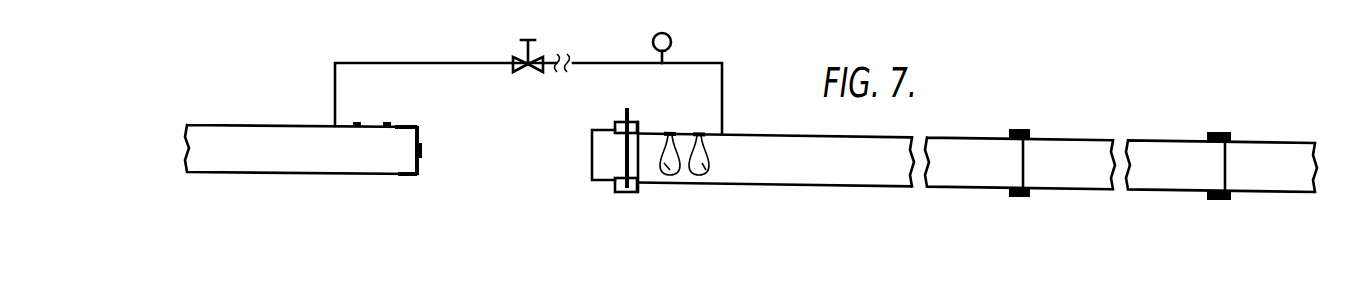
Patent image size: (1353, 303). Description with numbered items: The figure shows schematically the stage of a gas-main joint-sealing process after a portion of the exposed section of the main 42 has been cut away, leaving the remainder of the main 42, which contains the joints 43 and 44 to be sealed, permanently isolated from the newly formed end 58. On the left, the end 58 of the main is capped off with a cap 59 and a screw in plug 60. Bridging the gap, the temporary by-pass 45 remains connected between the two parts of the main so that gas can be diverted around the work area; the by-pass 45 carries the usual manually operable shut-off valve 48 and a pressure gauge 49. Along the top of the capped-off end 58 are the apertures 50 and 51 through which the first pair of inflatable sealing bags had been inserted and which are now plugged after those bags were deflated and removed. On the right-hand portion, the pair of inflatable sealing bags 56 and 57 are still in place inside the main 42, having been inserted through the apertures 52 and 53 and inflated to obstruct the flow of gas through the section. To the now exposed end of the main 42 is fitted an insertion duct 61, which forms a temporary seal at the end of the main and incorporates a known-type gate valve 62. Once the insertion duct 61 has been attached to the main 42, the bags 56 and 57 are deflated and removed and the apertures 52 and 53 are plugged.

The main 42 is at (963, 137).
The joint 43 is at (1028, 132).
The joint 44 is at (1231, 138).
The temporary by-pass 45 is at (411, 62).
The shut-off valve 48 is at (539, 57).
The pressure gauge 49 is at (672, 42).
The aperture 50 is at (357, 123).
The aperture 51 is at (387, 123).
The aperture 52 is at (669, 133).
The aperture 53 is at (701, 133).
The inflatable sealing bag 56 is at (666, 166).
The inflatable sealing bag 57 is at (703, 167).
The end 58 is at (243, 125).
The cap 59 is at (419, 127).
The screw in plug 60 is at (423, 150).
The insertion duct 61 is at (607, 182).
The gate valve 62 is at (622, 144).